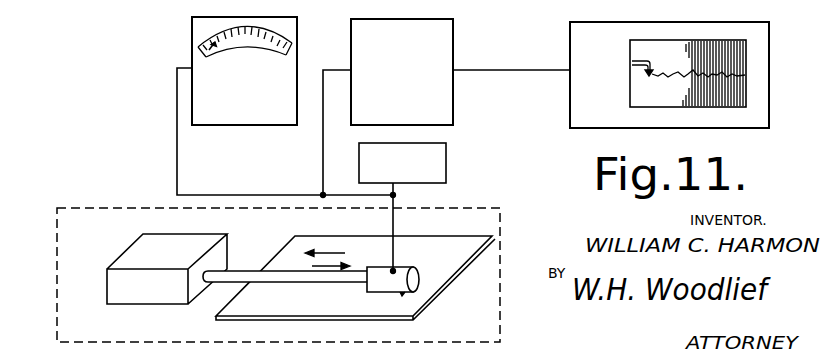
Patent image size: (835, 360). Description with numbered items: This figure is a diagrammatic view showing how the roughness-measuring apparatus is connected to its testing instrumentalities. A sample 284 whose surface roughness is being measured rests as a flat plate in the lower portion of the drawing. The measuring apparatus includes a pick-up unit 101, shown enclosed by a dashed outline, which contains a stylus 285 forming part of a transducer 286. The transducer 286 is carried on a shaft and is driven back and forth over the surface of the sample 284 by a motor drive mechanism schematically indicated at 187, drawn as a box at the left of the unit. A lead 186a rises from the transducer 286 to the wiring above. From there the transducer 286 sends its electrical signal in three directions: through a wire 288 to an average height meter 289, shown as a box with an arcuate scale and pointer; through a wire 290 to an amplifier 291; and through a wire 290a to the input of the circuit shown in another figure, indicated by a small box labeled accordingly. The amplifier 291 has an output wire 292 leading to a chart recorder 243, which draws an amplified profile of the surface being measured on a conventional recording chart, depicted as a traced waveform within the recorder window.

The pick-up unit 101 is at (57, 232).
The motor drive mechanism 187 is at (143, 247).
The sample 284 is at (293, 305).
The stylus 285 is at (405, 294).
The transducer 286 is at (405, 268).
The probe lead 186a is at (393, 223).
The wire 288 is at (177, 150).
The average height meter 289 is at (192, 28).
The wire 290 is at (323, 163).
The wire 290a is at (395, 187).
The amplifier 291 is at (453, 27).
The output wire 292 is at (488, 72).
The chart recorder 243 is at (760, 67).